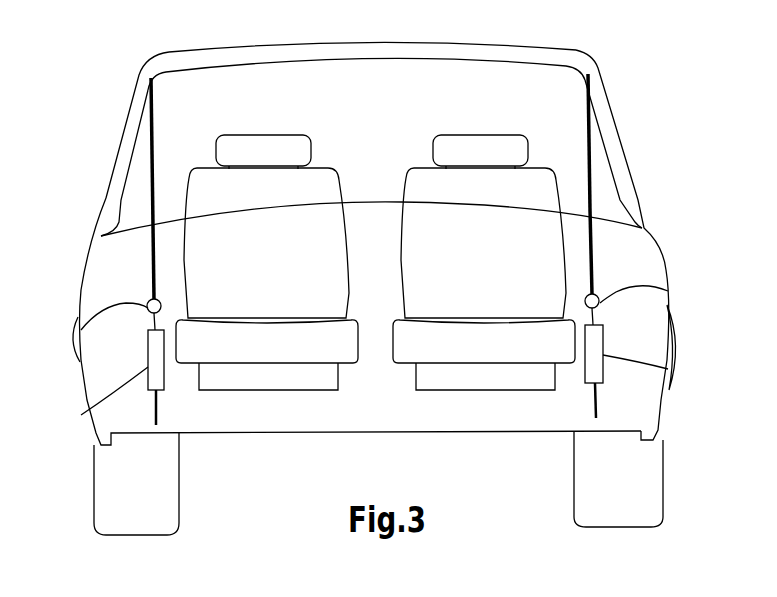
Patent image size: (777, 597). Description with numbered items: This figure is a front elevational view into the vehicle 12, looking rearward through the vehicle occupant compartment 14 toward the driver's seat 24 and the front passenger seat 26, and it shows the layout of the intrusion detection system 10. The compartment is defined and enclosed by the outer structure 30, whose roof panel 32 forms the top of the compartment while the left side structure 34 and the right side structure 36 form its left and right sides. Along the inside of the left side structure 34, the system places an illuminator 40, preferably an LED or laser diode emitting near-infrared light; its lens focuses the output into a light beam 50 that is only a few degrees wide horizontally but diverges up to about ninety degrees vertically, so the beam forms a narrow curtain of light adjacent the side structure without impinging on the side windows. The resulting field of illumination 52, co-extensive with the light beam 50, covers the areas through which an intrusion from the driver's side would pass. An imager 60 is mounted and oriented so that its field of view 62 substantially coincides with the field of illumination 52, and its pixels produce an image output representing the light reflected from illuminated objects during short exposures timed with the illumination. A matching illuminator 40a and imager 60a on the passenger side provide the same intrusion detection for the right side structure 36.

The intrusion detection system 10 is at (143, 265).
The vehicle 12 is at (683, 127).
The vehicle occupant compartment 14 is at (258, 92).
The driver's seat 24 is at (498, 390).
The front passenger seat 26 is at (287, 390).
The outer structure 30 is at (135, 78).
The roof panel 32 is at (463, 45).
The left side structure 34 is at (636, 185).
The right side structure 36 is at (103, 198).
The illuminator 40 is at (667, 291).
The illuminator 40a is at (80, 330).
The light beam 50 is at (590, 120).
The field of illumination 52 is at (590, 160).
The imager 60 is at (667, 369).
The imager 60a is at (80, 415).
The field of view 62 is at (594, 242).